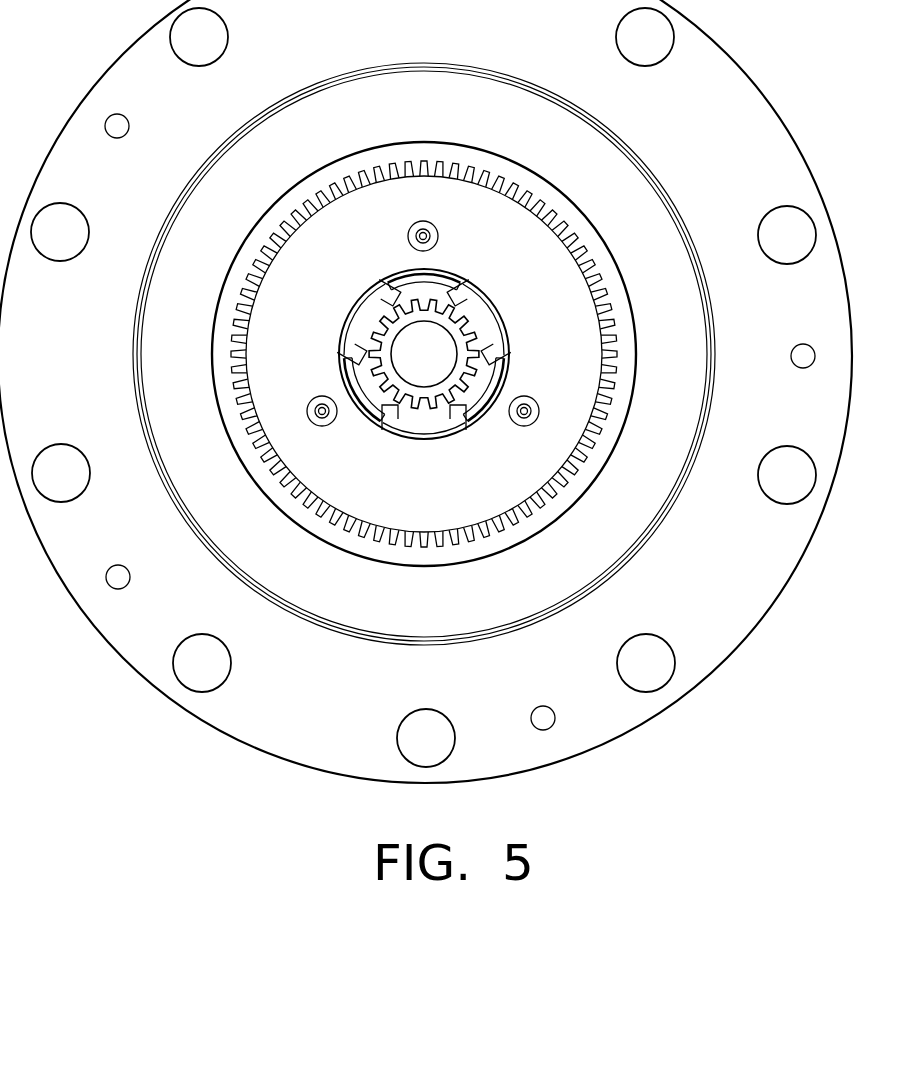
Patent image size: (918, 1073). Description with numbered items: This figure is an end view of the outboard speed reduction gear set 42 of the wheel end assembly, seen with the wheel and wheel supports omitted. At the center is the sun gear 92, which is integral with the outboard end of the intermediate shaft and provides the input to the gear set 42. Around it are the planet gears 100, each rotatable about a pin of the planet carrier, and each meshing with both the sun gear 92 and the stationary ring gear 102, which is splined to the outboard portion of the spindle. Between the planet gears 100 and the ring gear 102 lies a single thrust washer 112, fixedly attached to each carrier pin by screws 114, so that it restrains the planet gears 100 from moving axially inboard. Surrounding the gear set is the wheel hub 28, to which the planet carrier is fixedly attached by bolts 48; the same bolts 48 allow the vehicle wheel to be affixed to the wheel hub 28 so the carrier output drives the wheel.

The wheel hub 28 is at (725, 83).
The outboard speed reduction gear set 42 is at (328, 140).
The bolts 48 is at (673, 38).
The sun gear 92 is at (465, 330).
The planet gears 100 is at (397, 270).
The stationary ring gear 102 is at (445, 150).
The thrust washer 112 is at (318, 327).
The screws 114 is at (433, 228).